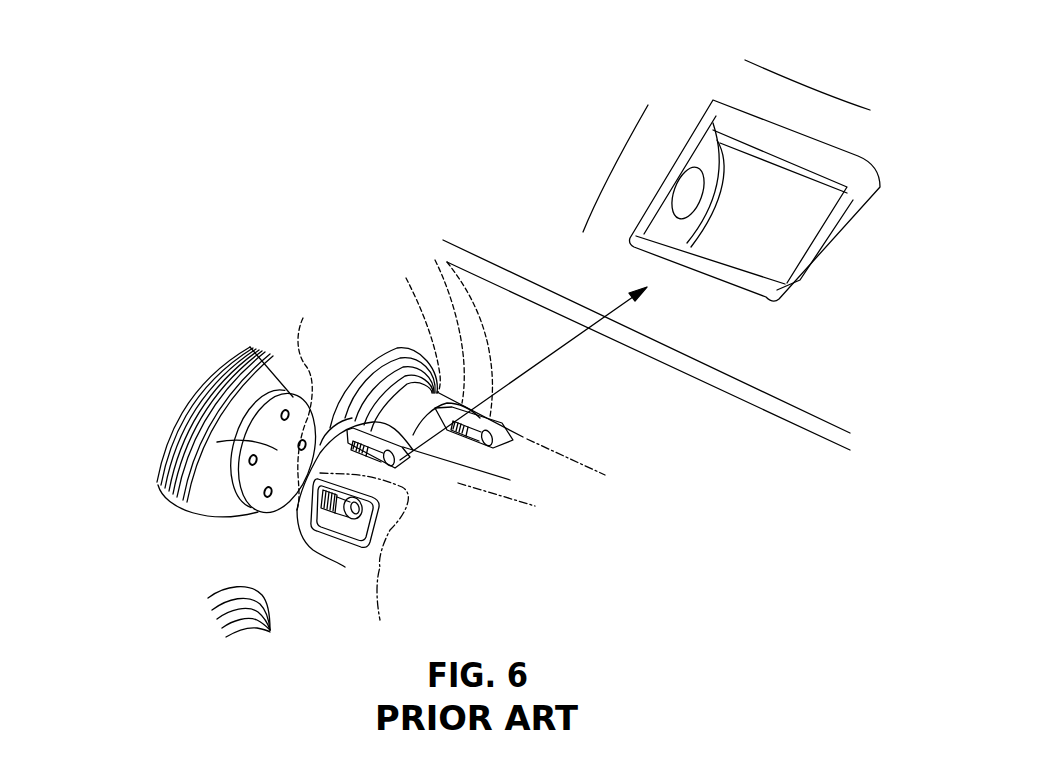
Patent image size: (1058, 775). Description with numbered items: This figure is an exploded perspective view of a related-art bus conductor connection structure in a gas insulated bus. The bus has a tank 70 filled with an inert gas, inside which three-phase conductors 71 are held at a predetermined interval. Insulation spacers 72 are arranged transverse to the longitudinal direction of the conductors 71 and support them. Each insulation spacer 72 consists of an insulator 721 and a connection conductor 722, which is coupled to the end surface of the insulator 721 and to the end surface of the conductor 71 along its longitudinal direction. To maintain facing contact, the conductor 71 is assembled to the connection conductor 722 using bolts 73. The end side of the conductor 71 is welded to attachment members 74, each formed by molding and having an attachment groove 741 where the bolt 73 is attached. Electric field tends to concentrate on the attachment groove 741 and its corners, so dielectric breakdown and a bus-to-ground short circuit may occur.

The tank 70 is at (768, 402).
The conductor 71 is at (457, 483).
The insulation spacer 72 is at (105, 432).
The insulator 721 is at (258, 528).
The connection conductor 722 is at (173, 482).
The bolt 73 is at (342, 515).
The attachment member 74 is at (782, 107).
The attachment groove 741 is at (352, 540).